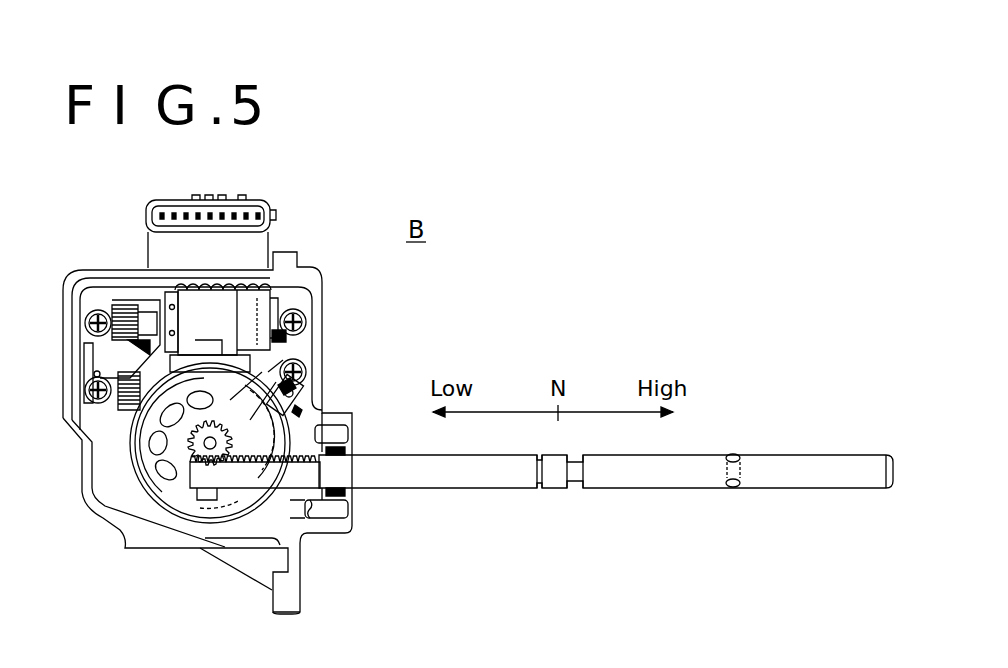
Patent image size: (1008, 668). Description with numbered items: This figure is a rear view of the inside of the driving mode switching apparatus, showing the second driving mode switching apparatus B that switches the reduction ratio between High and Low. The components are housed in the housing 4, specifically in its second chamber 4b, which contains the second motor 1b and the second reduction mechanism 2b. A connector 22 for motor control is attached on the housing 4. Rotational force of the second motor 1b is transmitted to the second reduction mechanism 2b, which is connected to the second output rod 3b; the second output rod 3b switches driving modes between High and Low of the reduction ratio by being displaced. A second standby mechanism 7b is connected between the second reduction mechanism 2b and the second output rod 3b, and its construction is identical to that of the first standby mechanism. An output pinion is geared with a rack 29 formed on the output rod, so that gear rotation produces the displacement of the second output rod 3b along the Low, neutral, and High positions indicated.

The connector for motor control 22 is at (270, 211).
The second motor 1b is at (223, 283).
The second chamber 4b is at (307, 343).
The housing 4 is at (317, 373).
The second output rod 3b is at (362, 452).
The second reduction mechanism 2b is at (103, 408).
The second standby mechanism 7b is at (157, 505).
The rack 29 is at (213, 477).